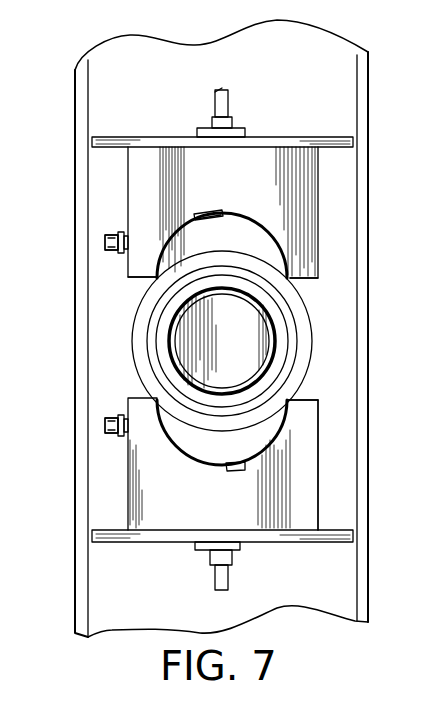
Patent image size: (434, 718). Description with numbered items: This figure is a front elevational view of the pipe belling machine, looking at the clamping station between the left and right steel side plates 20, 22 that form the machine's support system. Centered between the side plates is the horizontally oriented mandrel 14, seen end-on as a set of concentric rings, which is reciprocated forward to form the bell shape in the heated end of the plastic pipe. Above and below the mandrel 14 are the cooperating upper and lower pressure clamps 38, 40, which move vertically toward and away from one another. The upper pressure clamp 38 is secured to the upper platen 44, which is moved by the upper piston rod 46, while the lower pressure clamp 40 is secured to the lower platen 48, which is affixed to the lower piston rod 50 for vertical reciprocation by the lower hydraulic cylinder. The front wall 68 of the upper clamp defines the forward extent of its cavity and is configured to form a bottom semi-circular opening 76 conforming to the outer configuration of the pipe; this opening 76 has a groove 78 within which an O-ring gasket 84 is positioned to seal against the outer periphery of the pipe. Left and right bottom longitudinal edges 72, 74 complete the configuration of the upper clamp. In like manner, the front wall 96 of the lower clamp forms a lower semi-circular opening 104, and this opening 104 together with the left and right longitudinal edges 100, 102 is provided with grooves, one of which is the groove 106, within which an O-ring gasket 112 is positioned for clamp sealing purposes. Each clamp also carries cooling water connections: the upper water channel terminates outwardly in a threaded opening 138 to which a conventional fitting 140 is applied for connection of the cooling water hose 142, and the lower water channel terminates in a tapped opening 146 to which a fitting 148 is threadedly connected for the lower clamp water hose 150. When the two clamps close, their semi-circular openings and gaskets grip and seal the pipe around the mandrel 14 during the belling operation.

The mandrel 14 is at (213, 318).
The left side plate 20 is at (64, 348).
The right side plate 22 is at (376, 337).
The upper pressure clamp 38 is at (324, 220).
The lower pressure clamp 40 is at (325, 500).
The upper platen 44 is at (222, 126).
The upper piston rod 46 is at (213, 107).
The lower platen 48 is at (244, 545).
The lower piston rod 50 is at (216, 578).
The front wall 68 is at (145, 168).
The left bottom longitudinal edge 72 is at (131, 290).
The right bottom longitudinal edge 74 is at (308, 282).
The semi-circular opening 76 is at (260, 242).
The groove 78 is at (208, 214).
The O-ring gasket 84 is at (218, 216).
The front wall 96 is at (158, 513).
The left bottom longitudinal edge 100 is at (130, 400).
The right bottom longitudinal edge 102 is at (316, 402).
The semi-circular opening 104 is at (180, 446).
The groove 106 is at (236, 470).
The O-ring gasket 112 is at (298, 400).
The threaded opening 138 is at (124, 238).
The fitting 140 is at (118, 250).
The cooling water hose 142 is at (108, 240).
The tapped opening 146 is at (124, 440).
The fitting 148 is at (119, 434).
The lower clamp water hose 150 is at (108, 422).